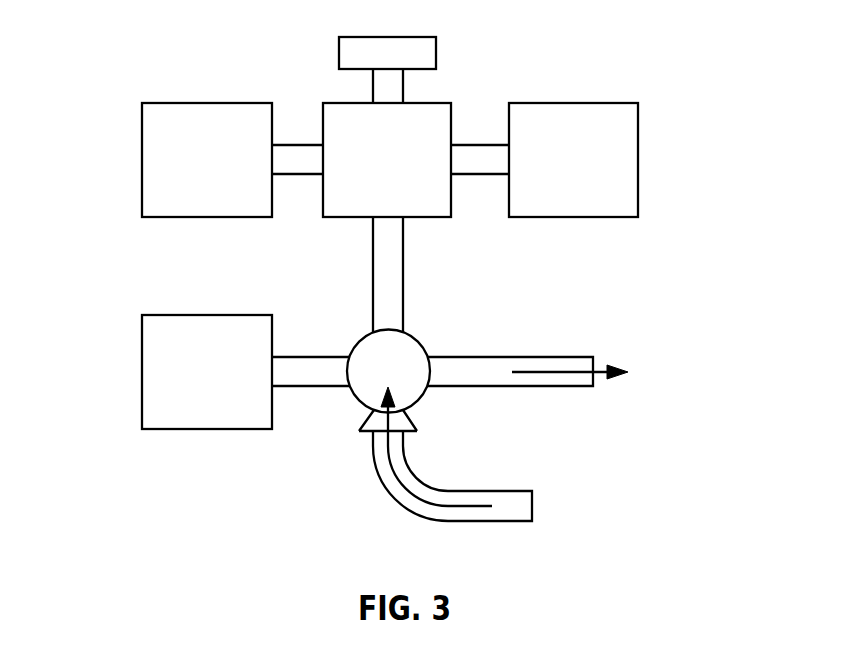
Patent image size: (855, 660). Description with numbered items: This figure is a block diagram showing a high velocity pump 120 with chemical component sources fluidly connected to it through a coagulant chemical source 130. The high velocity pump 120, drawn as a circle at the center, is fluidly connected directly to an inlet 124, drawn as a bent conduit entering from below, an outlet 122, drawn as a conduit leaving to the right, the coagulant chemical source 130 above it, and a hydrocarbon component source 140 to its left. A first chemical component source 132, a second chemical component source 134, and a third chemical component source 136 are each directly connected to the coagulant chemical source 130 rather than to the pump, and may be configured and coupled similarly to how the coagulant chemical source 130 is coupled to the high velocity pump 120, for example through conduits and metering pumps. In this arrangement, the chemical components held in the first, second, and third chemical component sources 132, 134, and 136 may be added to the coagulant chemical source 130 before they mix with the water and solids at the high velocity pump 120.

The high velocity pump 120 is at (368, 388).
The outlet 122 is at (517, 356).
The inlet 124 is at (470, 521).
The coagulant chemical source 130 is at (428, 200).
The first chemical component source 132 is at (622, 146).
The second chemical component source 134 is at (168, 153).
The third chemical component source 136 is at (353, 49).
The hydrocarbon component source 140 is at (173, 382).